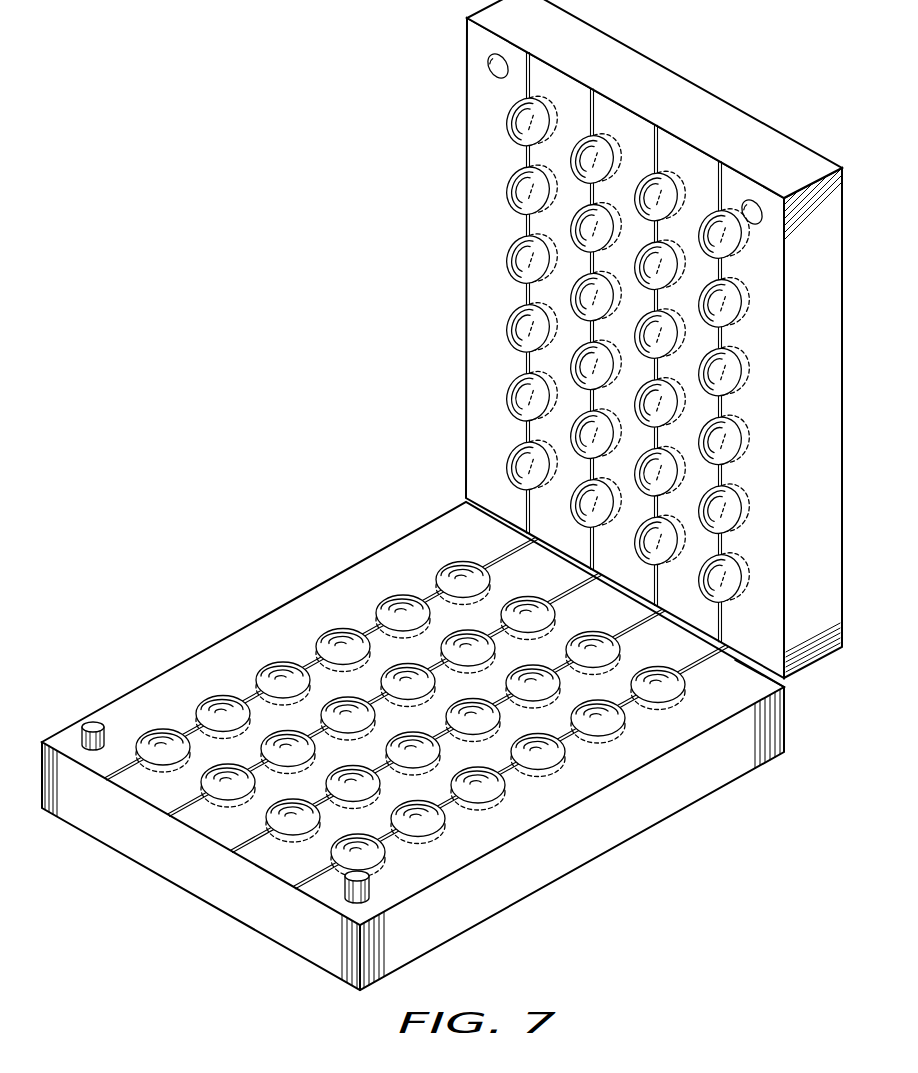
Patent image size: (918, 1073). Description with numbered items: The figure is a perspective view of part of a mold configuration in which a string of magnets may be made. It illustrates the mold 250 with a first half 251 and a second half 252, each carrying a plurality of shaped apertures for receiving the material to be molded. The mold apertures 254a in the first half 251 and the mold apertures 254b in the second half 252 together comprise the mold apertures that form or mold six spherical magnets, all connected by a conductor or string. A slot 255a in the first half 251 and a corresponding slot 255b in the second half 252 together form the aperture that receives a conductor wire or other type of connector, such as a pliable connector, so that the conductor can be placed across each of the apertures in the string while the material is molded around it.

The mold 250 is at (447, 423).
The first half 251 is at (613, 828).
The second half 252 is at (485, 307).
The mold apertures 254a is at (312, 643).
The mold apertures 254b is at (517, 305).
The slot 255a is at (132, 760).
The slot 255b is at (530, 153).